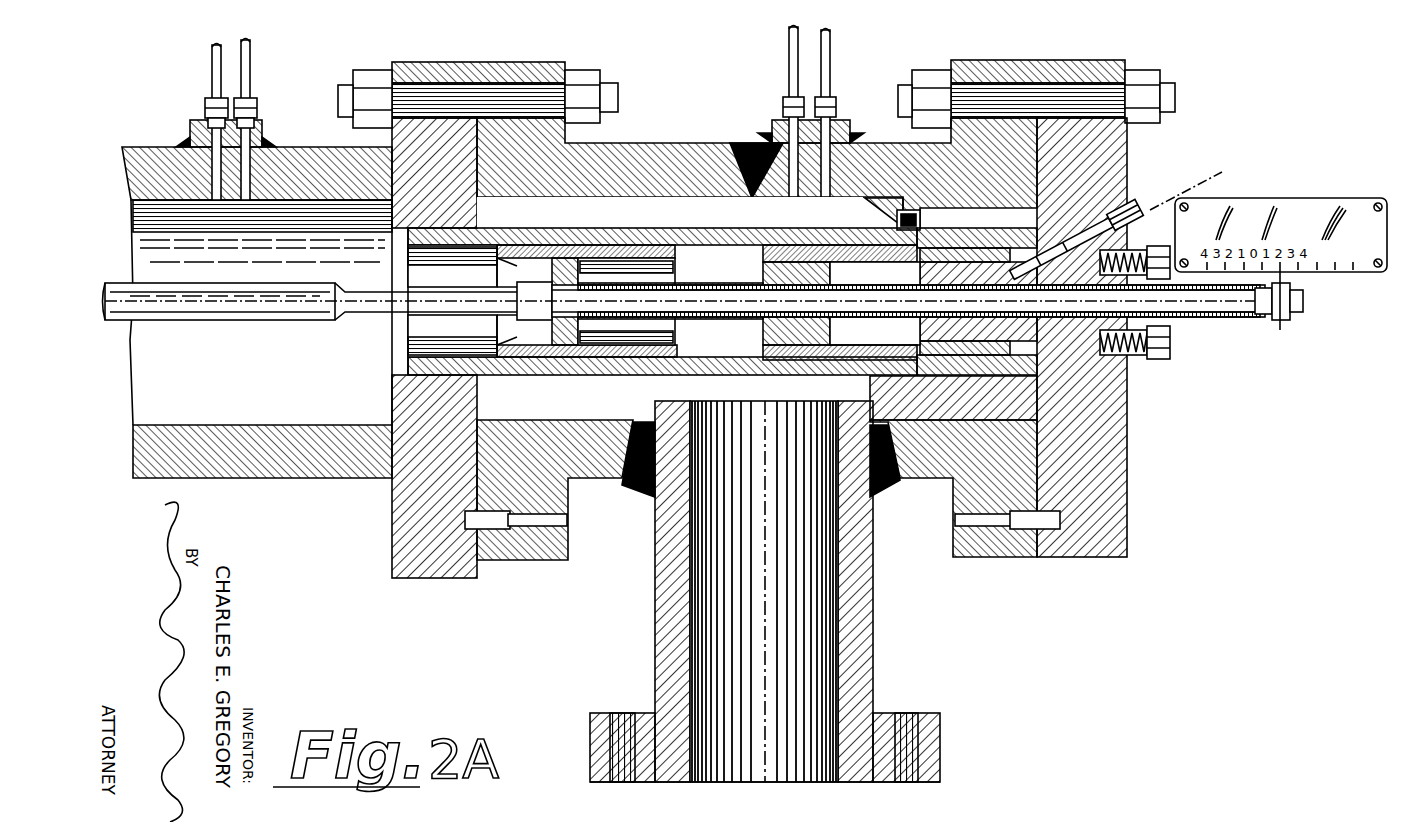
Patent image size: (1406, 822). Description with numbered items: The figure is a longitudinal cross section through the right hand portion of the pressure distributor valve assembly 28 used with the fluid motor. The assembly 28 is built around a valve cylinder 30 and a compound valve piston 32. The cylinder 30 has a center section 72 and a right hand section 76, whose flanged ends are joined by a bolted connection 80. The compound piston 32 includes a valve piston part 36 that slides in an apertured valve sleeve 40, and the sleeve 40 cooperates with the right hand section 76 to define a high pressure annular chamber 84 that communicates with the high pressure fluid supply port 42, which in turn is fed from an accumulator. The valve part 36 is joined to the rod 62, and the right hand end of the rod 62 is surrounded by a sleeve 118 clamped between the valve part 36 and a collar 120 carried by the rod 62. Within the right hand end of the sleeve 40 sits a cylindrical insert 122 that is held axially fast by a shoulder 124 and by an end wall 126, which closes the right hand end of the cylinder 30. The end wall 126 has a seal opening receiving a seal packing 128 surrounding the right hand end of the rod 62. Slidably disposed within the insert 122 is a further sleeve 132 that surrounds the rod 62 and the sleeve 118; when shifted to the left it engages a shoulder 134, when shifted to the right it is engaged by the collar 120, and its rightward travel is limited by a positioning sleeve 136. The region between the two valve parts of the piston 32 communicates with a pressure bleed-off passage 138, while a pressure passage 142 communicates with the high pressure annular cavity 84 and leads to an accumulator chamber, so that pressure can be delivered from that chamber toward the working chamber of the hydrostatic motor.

The assembly 28 is at (153, 148).
The valve cylinder 30 is at (128, 160).
The compound valve piston 32 is at (218, 298).
The valve piston part 36 is at (603, 240).
The valve sleeve 40 is at (665, 250).
The high pressure fluid supply port 42 is at (830, 630).
The rod 62 is at (724, 298).
The center section 72 is at (266, 435).
The right hand section 76 is at (688, 150).
The bolted connection 80 is at (528, 62).
The high pressure annular chamber 84 is at (600, 208).
The sleeve 118 is at (685, 287).
The collar 120 is at (980, 248).
The cylindrical insert 122 is at (822, 262).
The shoulder 124 is at (932, 240).
The end wall 126 is at (1110, 162).
The seal packing 128 is at (1090, 330).
The sleeve 132 is at (805, 246).
The shoulder 134 is at (782, 357).
The positioning sleeve 136 is at (975, 340).
The pressure bleed-off passage 138 is at (248, 70).
The pressure passage 142 is at (1195, 190).